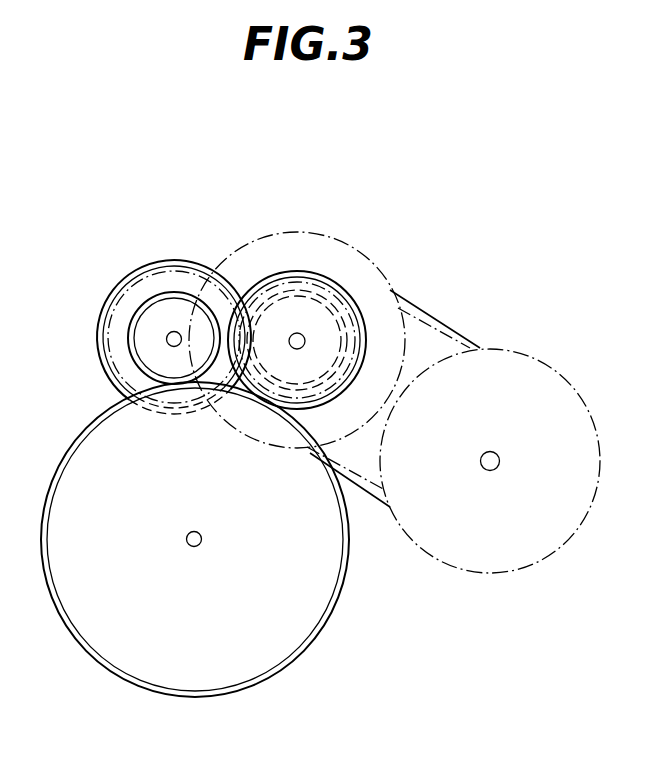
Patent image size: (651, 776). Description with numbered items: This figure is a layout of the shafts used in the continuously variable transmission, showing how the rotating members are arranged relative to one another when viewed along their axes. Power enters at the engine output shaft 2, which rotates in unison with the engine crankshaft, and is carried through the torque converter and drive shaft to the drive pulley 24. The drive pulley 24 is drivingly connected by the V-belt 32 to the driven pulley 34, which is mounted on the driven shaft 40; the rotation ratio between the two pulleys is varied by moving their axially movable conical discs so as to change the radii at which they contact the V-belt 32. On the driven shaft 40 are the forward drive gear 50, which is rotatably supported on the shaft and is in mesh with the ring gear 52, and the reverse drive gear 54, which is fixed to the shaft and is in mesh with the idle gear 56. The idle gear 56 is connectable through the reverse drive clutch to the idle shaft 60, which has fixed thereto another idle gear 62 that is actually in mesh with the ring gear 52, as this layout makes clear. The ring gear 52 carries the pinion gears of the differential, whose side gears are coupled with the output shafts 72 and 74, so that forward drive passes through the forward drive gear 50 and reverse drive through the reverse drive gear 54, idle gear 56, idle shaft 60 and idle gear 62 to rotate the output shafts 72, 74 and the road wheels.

The engine output shaft 2 is at (498, 454).
The drive pulley 24 is at (570, 353).
The V-belt 32 is at (459, 320).
The driven pulley 34 is at (380, 263).
The driven shaft 40 is at (299, 325).
The forward drive gear 50 is at (278, 270).
The ring gear 52 is at (333, 603).
The reverse drive gear 54 is at (312, 290).
The idle gear 56 is at (166, 258).
The idle shaft 60 is at (168, 340).
The idle gear 62 is at (137, 312).
The output shaft 72 is at (239, 562).
The output shaft 74 is at (202, 546).